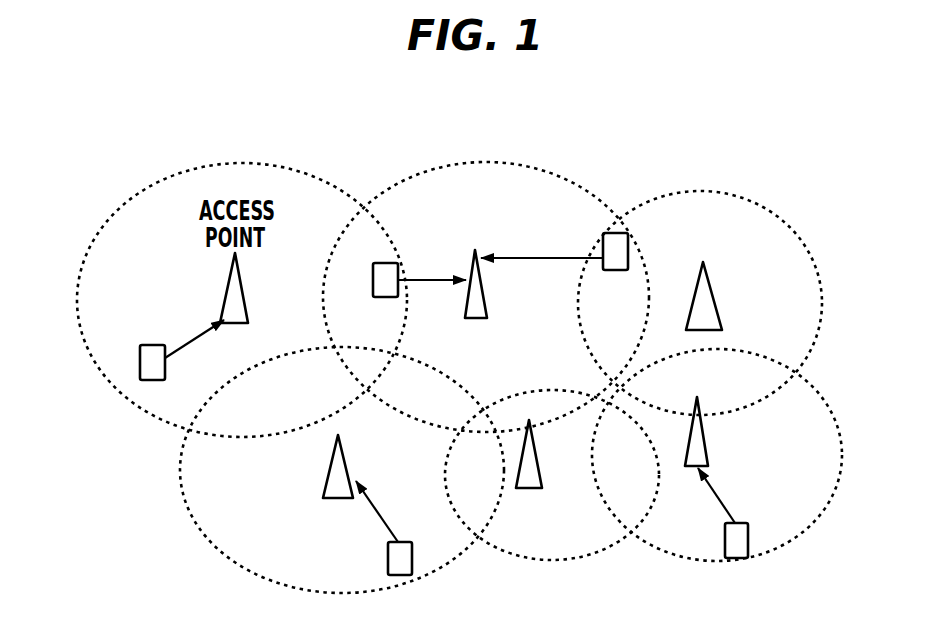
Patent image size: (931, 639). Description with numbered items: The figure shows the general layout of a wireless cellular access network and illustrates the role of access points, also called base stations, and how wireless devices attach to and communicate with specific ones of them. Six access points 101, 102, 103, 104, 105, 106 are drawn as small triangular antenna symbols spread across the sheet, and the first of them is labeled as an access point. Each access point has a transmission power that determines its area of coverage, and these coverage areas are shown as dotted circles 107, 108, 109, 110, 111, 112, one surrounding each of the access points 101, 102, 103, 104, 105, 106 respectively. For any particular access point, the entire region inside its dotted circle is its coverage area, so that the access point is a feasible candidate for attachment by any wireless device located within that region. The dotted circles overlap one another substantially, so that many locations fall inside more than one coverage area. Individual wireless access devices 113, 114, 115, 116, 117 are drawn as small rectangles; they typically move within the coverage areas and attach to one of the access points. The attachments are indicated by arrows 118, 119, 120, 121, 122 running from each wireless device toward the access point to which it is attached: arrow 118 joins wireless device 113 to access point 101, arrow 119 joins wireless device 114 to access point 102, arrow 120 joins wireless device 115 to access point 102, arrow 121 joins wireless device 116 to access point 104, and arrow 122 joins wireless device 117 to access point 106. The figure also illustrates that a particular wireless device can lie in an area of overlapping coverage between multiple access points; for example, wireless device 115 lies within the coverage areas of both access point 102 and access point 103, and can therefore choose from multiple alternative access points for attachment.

The access point 101 is at (225, 290).
The access point 102 is at (470, 262).
The access point 103 is at (713, 292).
The access point 104 is at (710, 450).
The access point 105 is at (530, 491).
The access point 106 is at (325, 480).
The coverage area 107 is at (110, 218).
The coverage area 108 is at (578, 182).
The coverage area 109 is at (797, 232).
The coverage area 110 is at (787, 543).
The coverage area 111 is at (580, 553).
The coverage area 112 is at (230, 558).
The wireless access device 113 is at (140, 368).
The wireless access device 114 is at (372, 281).
The wireless access device 115 is at (630, 245).
The wireless access device 116 is at (750, 530).
The wireless access device 117 is at (413, 562).
The wireless link between mobile station 113 and access point 101 118 is at (185, 348).
The wireless link between mobile station 114 and access point 102 119 is at (432, 279).
The wireless link between mobile station 115 and access point 102 120 is at (518, 256).
The wireless link between mobile station 116 and access point 104 121 is at (722, 500).
The wireless link between mobile station 117 and access point 106 122 is at (380, 513).